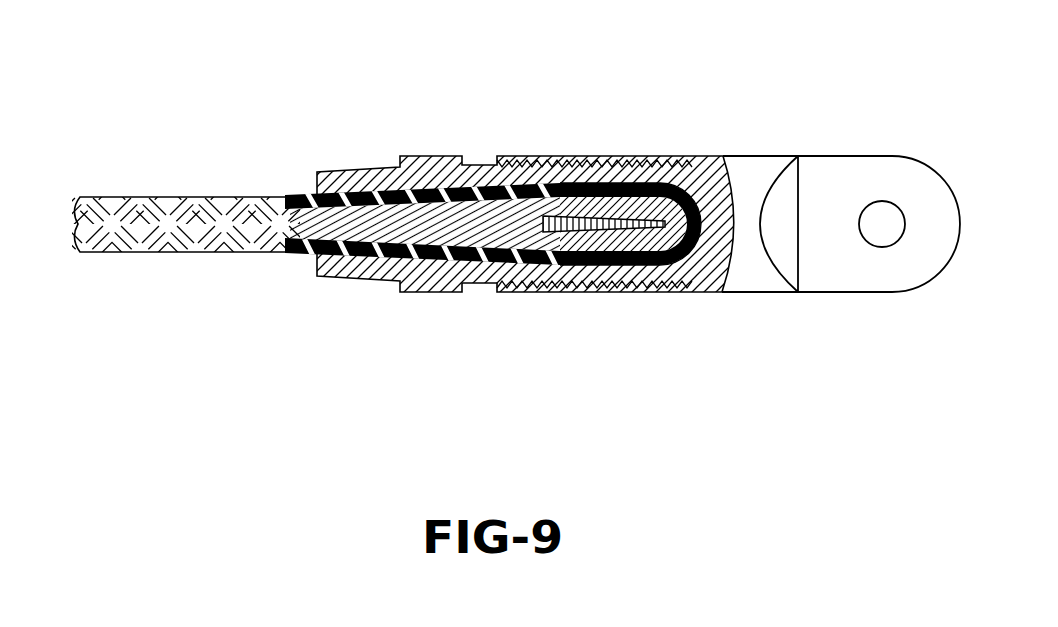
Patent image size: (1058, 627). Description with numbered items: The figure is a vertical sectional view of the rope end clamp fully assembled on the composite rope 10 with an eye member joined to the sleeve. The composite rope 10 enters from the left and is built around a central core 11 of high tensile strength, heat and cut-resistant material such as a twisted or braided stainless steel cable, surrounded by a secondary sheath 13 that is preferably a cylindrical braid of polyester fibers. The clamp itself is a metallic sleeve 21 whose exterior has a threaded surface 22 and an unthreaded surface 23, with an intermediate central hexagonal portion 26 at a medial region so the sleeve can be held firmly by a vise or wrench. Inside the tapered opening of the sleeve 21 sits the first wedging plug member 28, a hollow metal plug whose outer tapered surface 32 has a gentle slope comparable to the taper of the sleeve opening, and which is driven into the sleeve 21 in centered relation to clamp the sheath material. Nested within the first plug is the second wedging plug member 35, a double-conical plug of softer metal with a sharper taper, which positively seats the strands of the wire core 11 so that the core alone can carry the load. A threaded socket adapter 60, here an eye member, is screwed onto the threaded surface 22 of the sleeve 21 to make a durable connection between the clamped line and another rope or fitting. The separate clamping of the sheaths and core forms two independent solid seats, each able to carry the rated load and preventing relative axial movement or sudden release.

The composite rope 10 is at (128, 194).
The central core 11 is at (313, 226).
The secondary sheath 13 is at (425, 247).
The metallic sleeve 21 is at (477, 290).
The threaded exterior surface 22 is at (513, 157).
The unthreaded exterior surface 23 is at (365, 167).
The intermediate central hexagonal portion 26 is at (423, 157).
The first wedging plug member 28 is at (555, 203).
The outer tapered surface 32 is at (568, 262).
The second wedging plug member 35 is at (682, 258).
The threaded socket adapter 60 is at (780, 152).